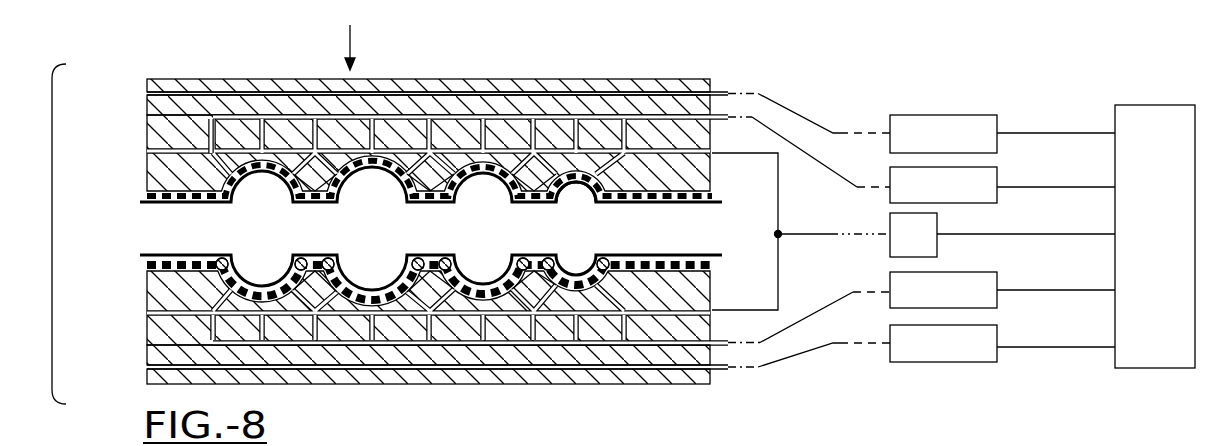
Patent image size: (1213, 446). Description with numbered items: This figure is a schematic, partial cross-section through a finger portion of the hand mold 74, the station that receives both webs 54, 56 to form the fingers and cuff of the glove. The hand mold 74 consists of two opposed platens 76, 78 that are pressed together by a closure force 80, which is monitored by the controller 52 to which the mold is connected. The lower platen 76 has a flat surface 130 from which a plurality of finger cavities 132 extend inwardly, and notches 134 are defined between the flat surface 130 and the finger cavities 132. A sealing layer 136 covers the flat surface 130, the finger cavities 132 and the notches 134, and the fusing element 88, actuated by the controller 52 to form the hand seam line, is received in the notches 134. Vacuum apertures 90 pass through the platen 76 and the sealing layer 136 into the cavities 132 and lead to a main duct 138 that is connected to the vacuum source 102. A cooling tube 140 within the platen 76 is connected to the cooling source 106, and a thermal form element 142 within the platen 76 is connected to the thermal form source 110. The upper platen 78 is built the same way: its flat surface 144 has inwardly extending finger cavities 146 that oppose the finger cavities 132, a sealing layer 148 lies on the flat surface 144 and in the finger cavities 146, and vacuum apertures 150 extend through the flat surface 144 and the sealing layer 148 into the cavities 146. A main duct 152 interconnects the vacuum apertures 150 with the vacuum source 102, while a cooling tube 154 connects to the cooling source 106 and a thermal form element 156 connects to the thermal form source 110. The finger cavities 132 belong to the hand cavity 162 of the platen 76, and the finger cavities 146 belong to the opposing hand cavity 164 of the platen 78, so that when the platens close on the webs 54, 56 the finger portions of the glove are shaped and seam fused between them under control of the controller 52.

The controller 52 is at (1155, 105).
The web 54 is at (140, 254).
The web 56 is at (140, 202).
The hand mold 74 is at (39, 234).
The platen 76 is at (147, 323).
The platen 78 is at (147, 132).
The closure force 80 is at (341, 38).
The fusing element 88 is at (303, 258).
The vacuum apertures 90 is at (205, 347).
The vacuum source 102 is at (997, 170).
The cooling source 106 is at (997, 117).
The thermal form source 110 is at (937, 222).
The flat surface 130 is at (173, 267).
The finger cavities 132 is at (247, 285).
The notches 134 is at (708, 293).
The sealing layer 136 is at (600, 287).
The main duct 138 is at (572, 347).
The cooling tube 140 is at (415, 372).
The thermal form element 142 is at (779, 265).
The flat surface 144 is at (150, 185).
The finger cavities 146 is at (583, 195).
The sealing layer 148 is at (700, 197).
The vacuum apertures 150 is at (207, 123).
The main duct 152 is at (407, 115).
The cooling tube 154 is at (522, 92).
The thermal form element 156 is at (780, 206).
The hand cavity 162 is at (495, 262).
The hand cavity 164 is at (475, 188).